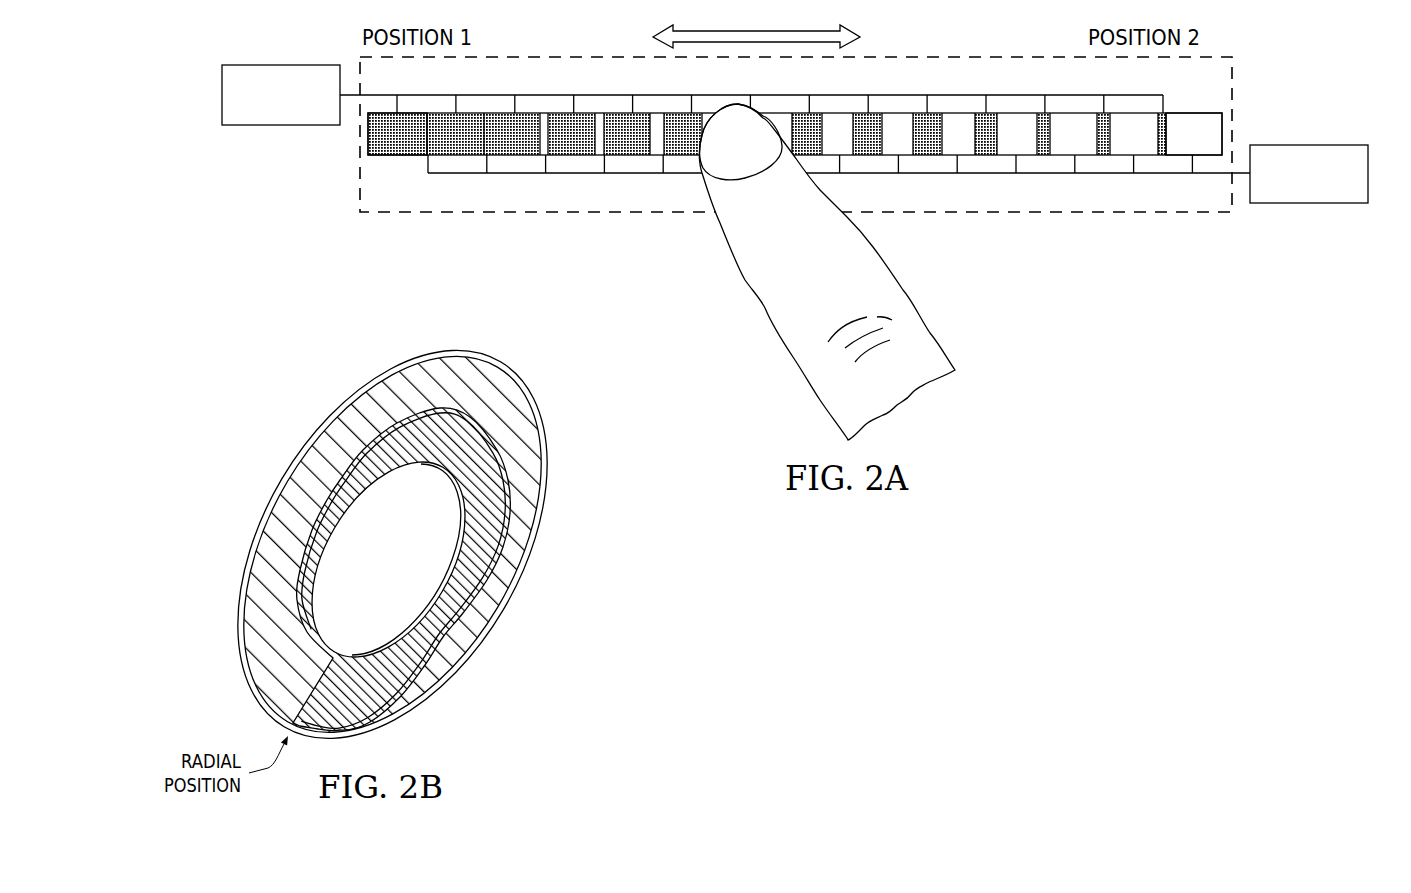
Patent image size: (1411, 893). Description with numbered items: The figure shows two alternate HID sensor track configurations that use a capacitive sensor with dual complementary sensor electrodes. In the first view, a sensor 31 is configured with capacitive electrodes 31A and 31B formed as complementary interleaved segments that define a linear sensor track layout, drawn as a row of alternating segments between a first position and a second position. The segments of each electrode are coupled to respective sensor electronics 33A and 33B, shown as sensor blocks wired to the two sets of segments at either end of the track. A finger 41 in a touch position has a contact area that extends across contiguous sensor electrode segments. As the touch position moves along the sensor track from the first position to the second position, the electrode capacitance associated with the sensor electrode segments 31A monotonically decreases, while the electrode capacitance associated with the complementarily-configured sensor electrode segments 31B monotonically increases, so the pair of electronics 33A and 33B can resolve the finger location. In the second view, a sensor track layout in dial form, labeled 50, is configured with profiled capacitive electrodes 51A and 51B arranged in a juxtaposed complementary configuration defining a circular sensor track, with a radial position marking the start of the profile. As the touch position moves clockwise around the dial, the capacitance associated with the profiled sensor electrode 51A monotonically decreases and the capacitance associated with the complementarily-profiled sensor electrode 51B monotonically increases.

In FIG. 2A, the sensor 31 is at (1240, 108).
In FIG. 2A, the capacitive electrode 31A is at (408, 150).
In FIG. 2A, the capacitive electrode 31B is at (1183, 121).
In FIG. 2A, the sensor electronics 33A is at (280, 65).
In FIG. 2A, the sensor electronics 33B is at (1308, 205).
In FIG. 2A, the finger 41 is at (737, 135).
In FIG. 2B, the ring 50 is at (277, 426).
In FIG. 2B, the profiled capacitive electrode 51A is at (540, 450).
In FIG. 2B, the profiled capacitive electrode 51B is at (487, 560).